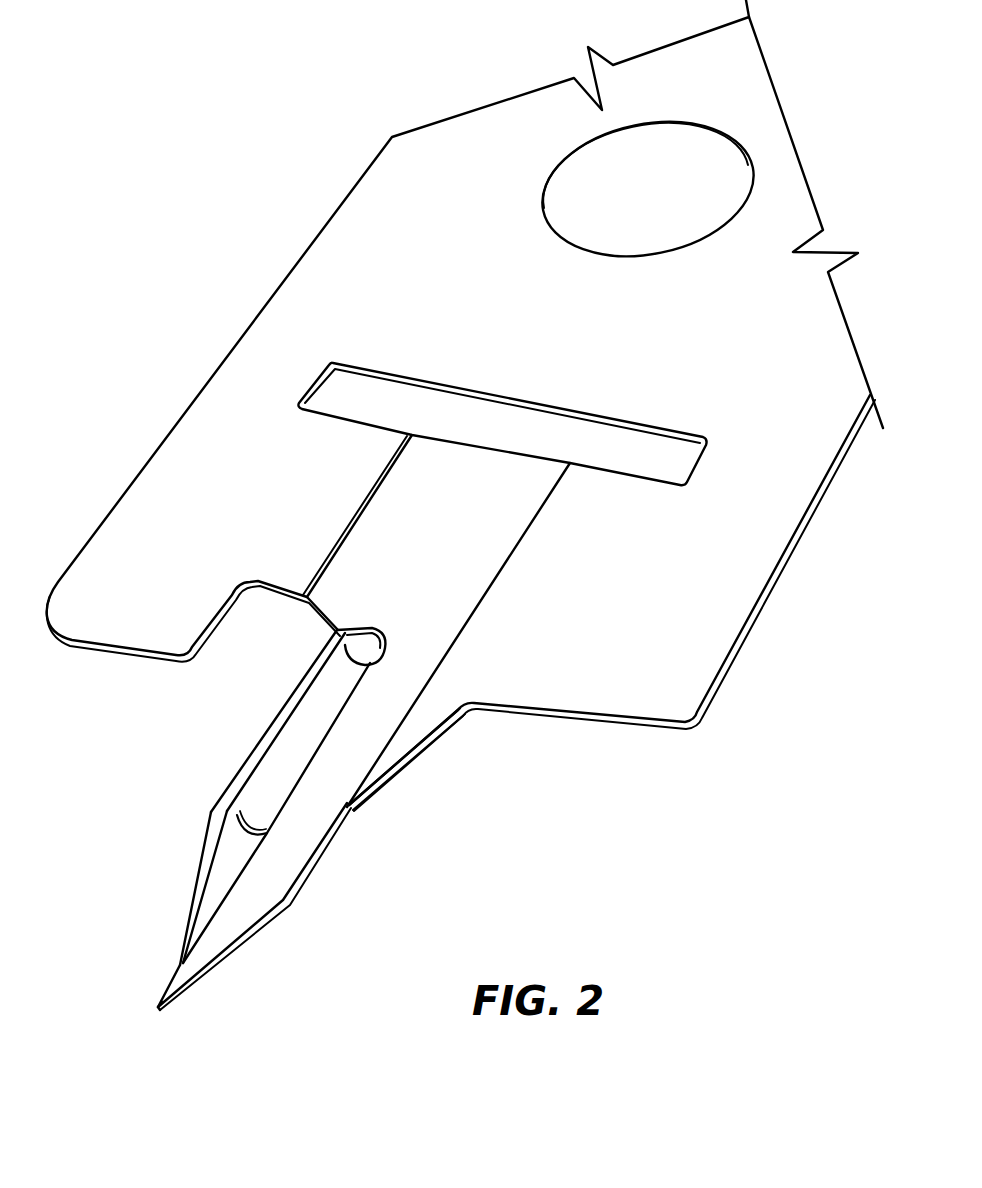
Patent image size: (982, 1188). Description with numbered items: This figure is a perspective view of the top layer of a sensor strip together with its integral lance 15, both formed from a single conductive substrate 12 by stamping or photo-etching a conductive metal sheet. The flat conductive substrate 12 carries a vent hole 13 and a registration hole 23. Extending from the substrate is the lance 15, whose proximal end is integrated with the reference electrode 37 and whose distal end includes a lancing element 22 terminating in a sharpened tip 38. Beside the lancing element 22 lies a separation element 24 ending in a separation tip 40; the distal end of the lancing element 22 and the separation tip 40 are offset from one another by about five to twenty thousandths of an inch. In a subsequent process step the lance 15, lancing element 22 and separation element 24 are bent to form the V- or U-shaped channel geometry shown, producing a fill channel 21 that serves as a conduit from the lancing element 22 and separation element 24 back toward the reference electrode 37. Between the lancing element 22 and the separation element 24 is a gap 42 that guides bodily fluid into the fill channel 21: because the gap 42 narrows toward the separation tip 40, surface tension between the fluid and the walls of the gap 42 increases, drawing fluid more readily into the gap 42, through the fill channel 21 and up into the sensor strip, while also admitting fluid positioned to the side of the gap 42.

The conductive substrate 12 is at (748, 335).
The vent hole 13 is at (353, 400).
The registration hole 23 is at (698, 192).
The lance 15 is at (267, 737).
The fill channel 21 is at (310, 728).
The reference electrode 37 is at (410, 592).
The gap 42 is at (238, 860).
The separation element 24 is at (197, 882).
The lancing element 22 is at (237, 947).
The separation tip 40 is at (178, 967).
The sharpened tip 38 is at (157, 1008).